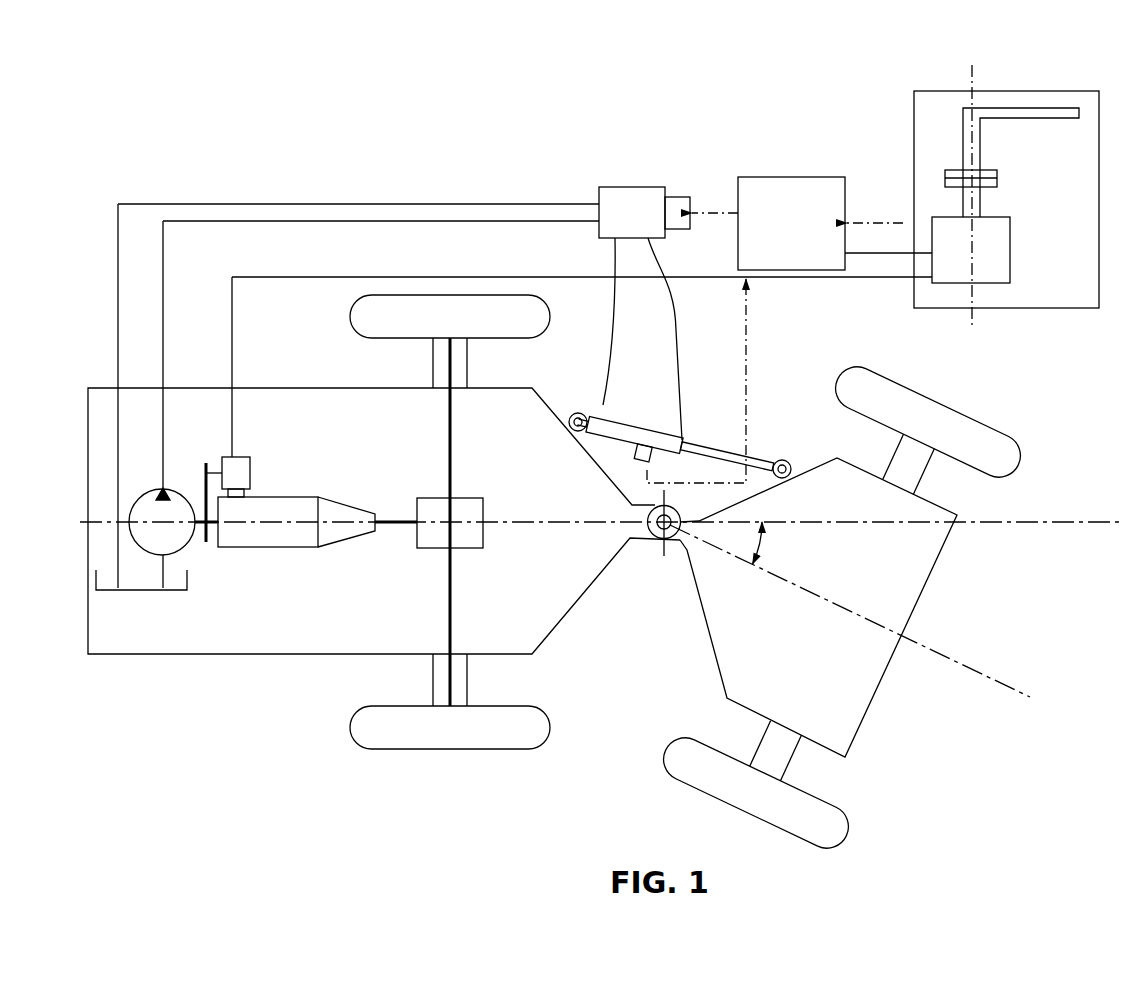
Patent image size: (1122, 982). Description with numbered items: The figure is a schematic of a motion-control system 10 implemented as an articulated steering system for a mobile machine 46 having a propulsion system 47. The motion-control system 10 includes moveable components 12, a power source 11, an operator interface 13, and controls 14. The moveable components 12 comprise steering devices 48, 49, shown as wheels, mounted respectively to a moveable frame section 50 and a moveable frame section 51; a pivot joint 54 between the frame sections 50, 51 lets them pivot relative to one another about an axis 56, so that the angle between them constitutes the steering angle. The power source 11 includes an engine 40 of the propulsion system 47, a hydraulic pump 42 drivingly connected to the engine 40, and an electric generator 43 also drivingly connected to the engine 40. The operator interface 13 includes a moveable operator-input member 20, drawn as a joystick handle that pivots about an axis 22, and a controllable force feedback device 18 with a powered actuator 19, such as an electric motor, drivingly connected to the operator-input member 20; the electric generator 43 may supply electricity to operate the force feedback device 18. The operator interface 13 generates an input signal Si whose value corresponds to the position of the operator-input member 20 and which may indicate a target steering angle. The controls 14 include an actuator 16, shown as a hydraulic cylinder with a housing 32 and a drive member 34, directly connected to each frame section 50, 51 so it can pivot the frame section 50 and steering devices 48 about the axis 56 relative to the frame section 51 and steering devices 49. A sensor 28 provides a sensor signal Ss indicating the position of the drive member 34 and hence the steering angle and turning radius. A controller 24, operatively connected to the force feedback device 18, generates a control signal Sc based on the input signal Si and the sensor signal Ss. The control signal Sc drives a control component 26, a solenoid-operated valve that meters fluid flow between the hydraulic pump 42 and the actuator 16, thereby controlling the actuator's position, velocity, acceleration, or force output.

The motion-control system 10 is at (783, 142).
The power source 11 is at (185, 465).
The moveable components 12 is at (702, 655).
The operator interface 13 is at (1073, 308).
The controls 14 is at (780, 283).
The actuator 16 is at (630, 430).
The controllable force feedback device 18 is at (998, 290).
The powered actuator 19 is at (983, 259).
The operator-input member 20 is at (1047, 112).
The axis 22 is at (972, 68).
The controller 24 is at (802, 239).
The control component 26 is at (644, 313).
The sensor 28 is at (640, 457).
The housing 32 is at (603, 412).
The drive member 34 is at (712, 455).
The engine 40 is at (268, 537).
The hydraulic pump 42 is at (188, 545).
The electric generator 43 is at (232, 472).
The mobile machine 46 is at (212, 738).
The propulsion system 47 is at (420, 362).
The steering devices 48 is at (960, 430).
The steering devices 49 is at (472, 305).
The moveable frame section 50 is at (847, 575).
The moveable frame section 51 is at (494, 472).
The pivot joint 54 is at (653, 535).
The axis 56 is at (650, 512).
The control signal Sc is at (707, 212).
The input signal Si is at (880, 223).
The sensor signal Ss is at (725, 338).